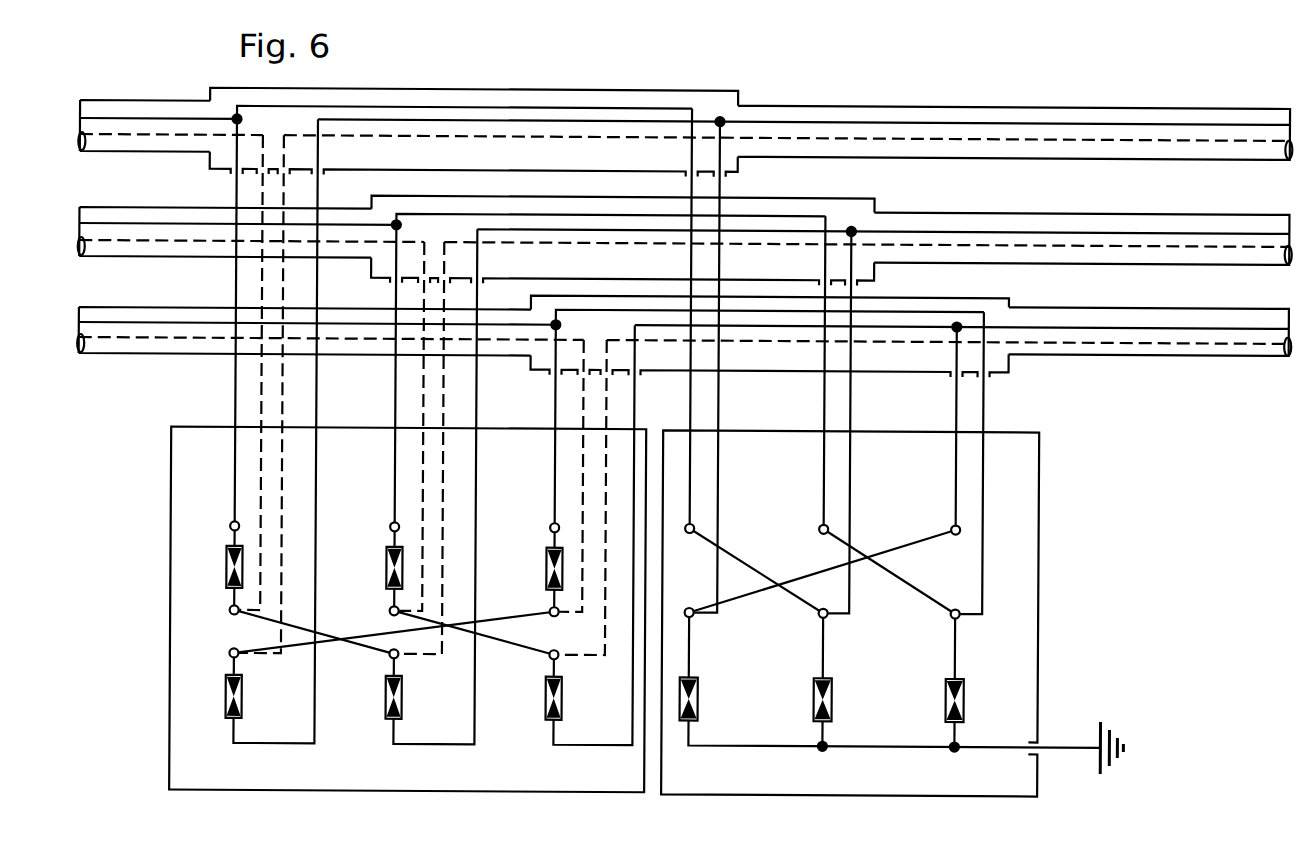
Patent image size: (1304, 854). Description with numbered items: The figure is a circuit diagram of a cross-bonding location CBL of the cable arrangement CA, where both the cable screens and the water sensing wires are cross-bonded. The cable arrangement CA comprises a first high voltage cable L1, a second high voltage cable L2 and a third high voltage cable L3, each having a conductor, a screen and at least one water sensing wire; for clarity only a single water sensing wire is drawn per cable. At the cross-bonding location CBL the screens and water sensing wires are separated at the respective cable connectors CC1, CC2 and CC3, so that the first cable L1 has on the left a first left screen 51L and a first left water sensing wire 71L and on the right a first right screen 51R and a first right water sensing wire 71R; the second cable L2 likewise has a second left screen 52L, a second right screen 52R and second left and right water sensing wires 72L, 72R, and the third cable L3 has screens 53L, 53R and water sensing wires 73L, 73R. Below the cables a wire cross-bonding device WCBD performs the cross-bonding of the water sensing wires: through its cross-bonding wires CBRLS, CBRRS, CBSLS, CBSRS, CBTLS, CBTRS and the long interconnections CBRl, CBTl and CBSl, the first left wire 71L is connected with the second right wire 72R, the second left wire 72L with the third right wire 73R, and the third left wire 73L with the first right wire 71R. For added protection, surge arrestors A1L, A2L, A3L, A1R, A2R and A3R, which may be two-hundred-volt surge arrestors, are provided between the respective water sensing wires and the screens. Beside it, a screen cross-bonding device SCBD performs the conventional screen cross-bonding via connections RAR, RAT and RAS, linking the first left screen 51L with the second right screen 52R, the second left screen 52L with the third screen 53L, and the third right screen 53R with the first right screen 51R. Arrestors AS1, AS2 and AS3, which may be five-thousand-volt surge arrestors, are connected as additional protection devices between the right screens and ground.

The first high voltage cable L1 is at (668, 126).
The second high voltage cable L2 is at (667, 231).
The third high voltage cable L3 is at (667, 327).
The first left screen 51L is at (176, 100).
The first left water sensing wire 71L is at (132, 134).
The first cable connector CC1 is at (448, 87).
The first right water sensing wire 71R is at (830, 134).
The first right screen 51R is at (935, 102).
The cross-bonding location CBL is at (717, 52).
The cable arrangement CA is at (1205, 51).
The second left screen 52L is at (198, 207).
The second left water sensing wire 72L is at (133, 240).
The second cable connector CC2 is at (875, 194).
The second right water sensing wire 72R is at (1085, 242).
The second right screen 52R is at (1012, 208).
The third left screen 53L is at (208, 307).
The third left water sensing wire 73L is at (160, 337).
The third cable connector CC3 is at (1010, 294).
The third right water sensing wire 73R is at (1090, 336).
The third right screen 53R is at (1185, 303).
The wire cross-bonding device WCBD is at (173, 703).
The screen cross-bonding device SCBD is at (1041, 582).
The cross-bonding wire CBRLS is at (236, 472).
The cross-bonding wire CBRRS is at (346, 459).
The cross-bonding wire CBSLS is at (396, 514).
The cross-bonding wire CBSRS is at (506, 458).
The cross-bonding wire CBTLS is at (556, 512).
The cross-bonding wire CBTRS is at (635, 704).
The long cross-bonding wire CBRl is at (258, 617).
The long cross-bonding wire CBTl is at (372, 632).
The long cross-bonding wire CBSl is at (501, 639).
The surge arrestor A1L is at (229, 573).
The surge arrestor A2L is at (389, 573).
The surge arrestor A3L is at (549, 571).
The surge arrestor A1R is at (229, 697).
The surge arrestor A2R is at (389, 697).
The surge arrestor A3R is at (549, 696).
The screen cross-bonding connection RAR is at (730, 553).
The screen cross-bonding connection RAT is at (897, 547).
The screen cross-bonding connection RAS is at (915, 592).
The arrestor AS1 is at (701, 693).
The arrestor AS2 is at (835, 693).
The arrestor AS3 is at (967, 693).